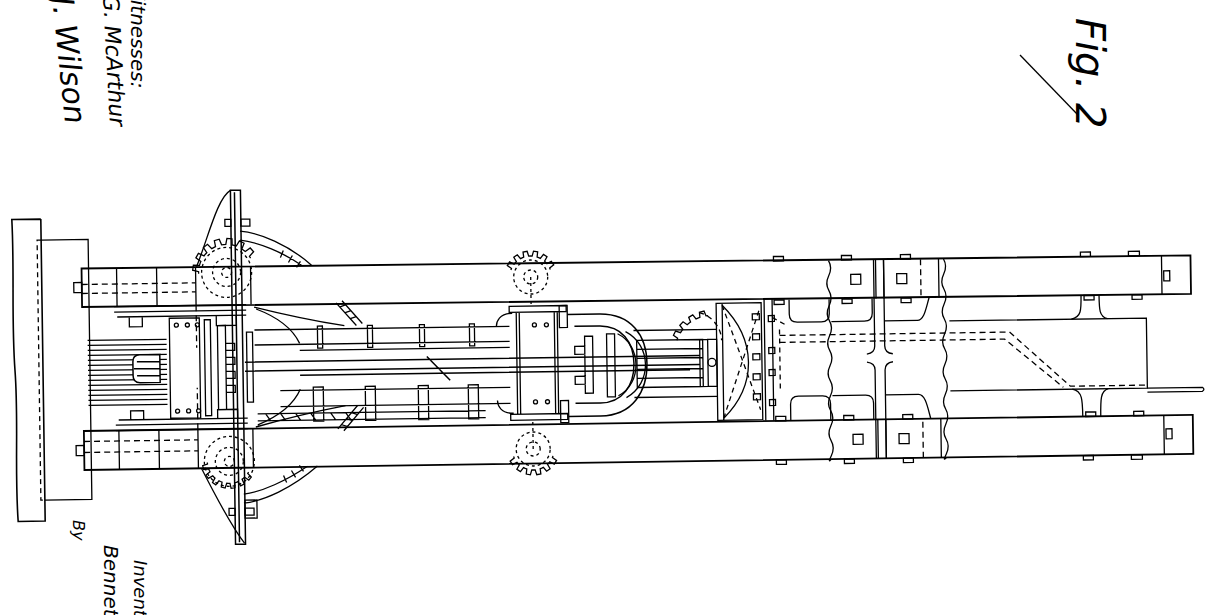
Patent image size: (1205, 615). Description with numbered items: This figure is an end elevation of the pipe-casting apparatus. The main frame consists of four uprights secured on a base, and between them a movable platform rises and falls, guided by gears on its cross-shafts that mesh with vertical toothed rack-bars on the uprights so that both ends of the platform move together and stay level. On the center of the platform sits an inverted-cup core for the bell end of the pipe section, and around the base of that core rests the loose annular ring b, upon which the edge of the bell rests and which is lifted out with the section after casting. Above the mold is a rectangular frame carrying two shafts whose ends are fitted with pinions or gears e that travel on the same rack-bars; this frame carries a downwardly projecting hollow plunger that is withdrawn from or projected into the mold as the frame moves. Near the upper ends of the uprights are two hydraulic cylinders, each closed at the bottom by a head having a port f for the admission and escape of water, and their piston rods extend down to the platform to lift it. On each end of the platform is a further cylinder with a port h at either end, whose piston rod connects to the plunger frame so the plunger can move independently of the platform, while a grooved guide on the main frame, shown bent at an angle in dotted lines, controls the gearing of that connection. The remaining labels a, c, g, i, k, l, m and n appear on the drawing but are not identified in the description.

The wall bracket a is at (52, 369).
The loose annular ring b is at (218, 261).
The wheel arm c is at (316, 366).
The pinions or gears e is at (530, 270).
The port f is at (532, 362).
The side beam g is at (636, 279).
The port h is at (381, 340).
The cross frame member i is at (858, 359).
The connecting rod k is at (963, 358).
The tongue l is at (1175, 377).
The lower rod m is at (383, 403).
The gear housing n is at (730, 360).